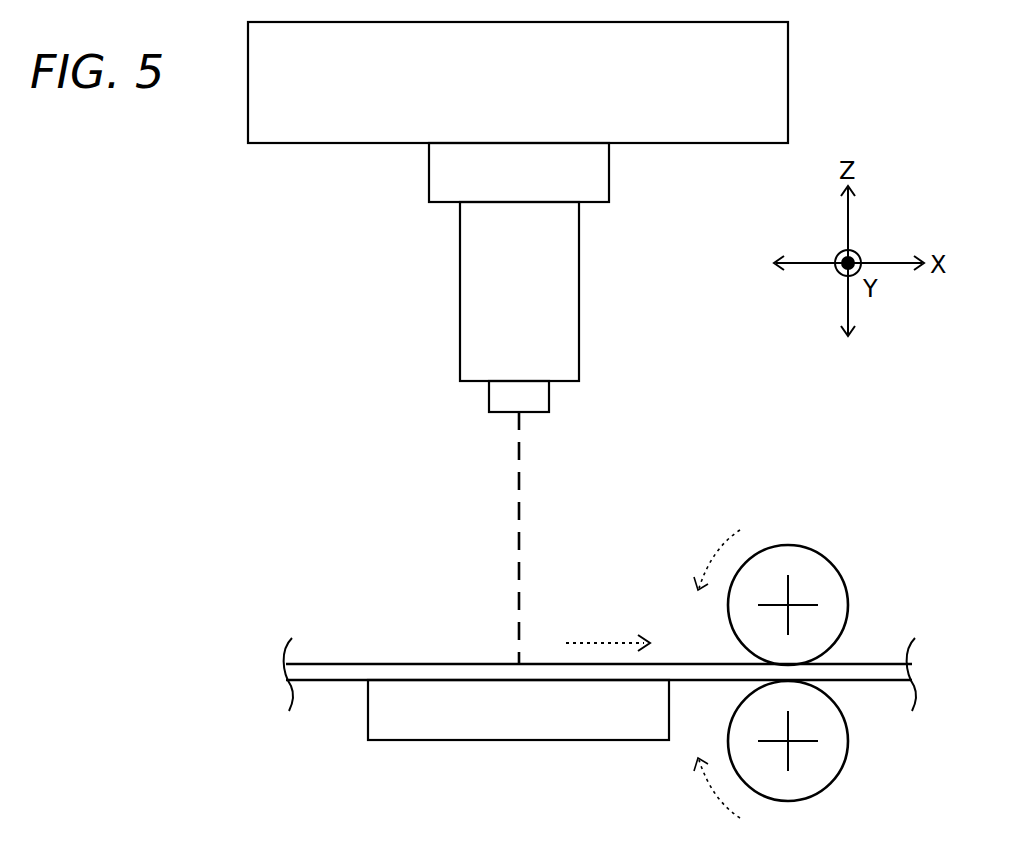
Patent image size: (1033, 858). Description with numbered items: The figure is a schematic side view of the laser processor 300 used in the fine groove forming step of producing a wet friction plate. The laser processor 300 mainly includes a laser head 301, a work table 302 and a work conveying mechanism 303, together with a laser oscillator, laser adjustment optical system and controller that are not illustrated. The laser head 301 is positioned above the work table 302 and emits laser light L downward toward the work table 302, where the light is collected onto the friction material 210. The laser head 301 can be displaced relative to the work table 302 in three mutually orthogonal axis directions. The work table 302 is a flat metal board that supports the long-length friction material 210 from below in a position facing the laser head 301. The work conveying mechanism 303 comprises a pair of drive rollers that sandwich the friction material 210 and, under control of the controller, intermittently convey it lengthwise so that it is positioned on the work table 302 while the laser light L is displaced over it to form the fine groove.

The laser processor 300 is at (203, 40).
The laser head 301 is at (458, 303).
The laser light L is at (522, 542).
The friction material 210 is at (331, 662).
The work table 302 is at (398, 742).
The work conveying mechanism 303 is at (818, 552).